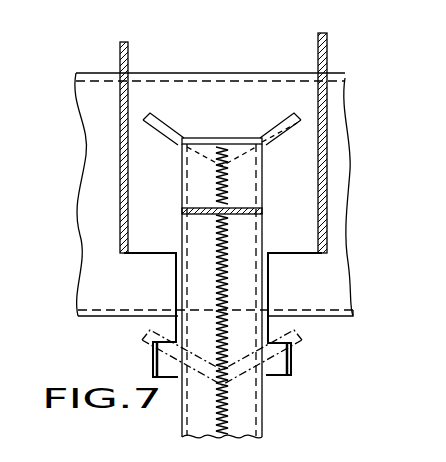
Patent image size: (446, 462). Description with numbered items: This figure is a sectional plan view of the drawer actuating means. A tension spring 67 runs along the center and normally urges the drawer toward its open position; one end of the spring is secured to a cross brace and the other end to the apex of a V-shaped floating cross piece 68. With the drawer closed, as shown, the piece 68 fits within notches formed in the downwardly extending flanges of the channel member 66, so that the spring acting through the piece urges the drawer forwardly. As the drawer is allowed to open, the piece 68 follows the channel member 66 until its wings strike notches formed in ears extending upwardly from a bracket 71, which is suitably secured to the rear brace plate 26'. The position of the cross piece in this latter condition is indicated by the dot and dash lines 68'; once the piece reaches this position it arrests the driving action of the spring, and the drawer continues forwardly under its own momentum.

The rear brace plate 26' is at (229, 185).
The channel member 66 is at (277, 172).
The tension spring 67 is at (232, 254).
The V-shaped floating cross piece 68 is at (222, 120).
The dot and dash lines showing the position of the cross piece 68' is at (238, 357).
The bracket 71 is at (293, 244).